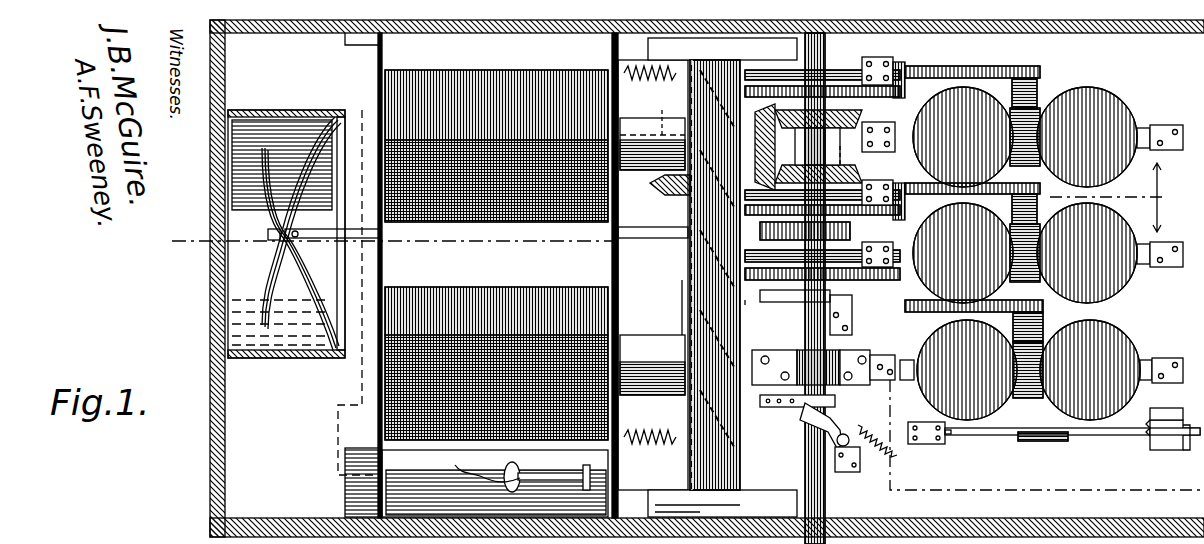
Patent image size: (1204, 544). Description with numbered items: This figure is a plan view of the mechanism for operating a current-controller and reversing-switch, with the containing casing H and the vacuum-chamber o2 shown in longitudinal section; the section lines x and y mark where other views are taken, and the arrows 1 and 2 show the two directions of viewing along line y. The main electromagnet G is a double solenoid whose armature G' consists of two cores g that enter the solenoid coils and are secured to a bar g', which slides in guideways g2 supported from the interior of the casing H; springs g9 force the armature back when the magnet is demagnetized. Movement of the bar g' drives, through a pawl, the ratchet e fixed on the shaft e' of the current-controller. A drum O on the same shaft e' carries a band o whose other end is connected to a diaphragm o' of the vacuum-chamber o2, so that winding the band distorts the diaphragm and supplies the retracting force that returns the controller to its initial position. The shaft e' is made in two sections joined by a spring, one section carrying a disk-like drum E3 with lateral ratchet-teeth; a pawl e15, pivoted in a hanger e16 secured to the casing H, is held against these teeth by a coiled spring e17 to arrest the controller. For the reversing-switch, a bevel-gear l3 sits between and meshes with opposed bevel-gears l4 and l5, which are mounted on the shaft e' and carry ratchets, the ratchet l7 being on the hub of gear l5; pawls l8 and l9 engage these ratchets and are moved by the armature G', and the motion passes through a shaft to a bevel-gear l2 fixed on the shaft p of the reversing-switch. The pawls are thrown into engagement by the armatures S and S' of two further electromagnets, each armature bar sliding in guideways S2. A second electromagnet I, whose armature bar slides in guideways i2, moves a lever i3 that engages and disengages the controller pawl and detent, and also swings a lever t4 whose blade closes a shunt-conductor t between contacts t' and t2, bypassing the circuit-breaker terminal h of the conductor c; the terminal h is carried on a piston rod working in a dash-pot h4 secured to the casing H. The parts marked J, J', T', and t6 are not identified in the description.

The casing H is at (314, 33).
The diaphragm o' is at (286, 234).
The vacuum-chamber o2 is at (301, 224).
The band o is at (345, 247).
The section line x is at (386, 241).
The electromagnet G is at (496, 239).
The armature G' is at (653, 275).
The shaft of reversing-switch p is at (682, 300).
The core g is at (652, 256).
The spring g9 is at (650, 255).
The guideway g2 is at (722, 277).
The section line y is at (916, 152).
The bevel-gear l2 is at (660, 193).
The bar g' is at (715, 275).
The disk-like drum E3 is at (718, 261).
The ratchet e is at (733, 296).
The ratchet l7 is at (815, 85).
The pawl l9 is at (860, 72).
The bevel-gear l3 is at (808, 147).
The bevel-gear l4 is at (866, 175).
The bevel-gear l5 is at (878, 127).
The pawl l8 is at (882, 210).
The drum O is at (822, 250).
The current-controller shaft e' is at (823, 288).
The pawl e15 is at (800, 412).
The stand or hanger e16 is at (866, 453).
The coiled spring e17 is at (940, 447).
The guideway S2 is at (1165, 240).
The armature S' is at (1034, 118).
The armature S is at (1032, 236).
The wheel J is at (963, 195).
The wheel J' is at (1087, 195).
The electromagnet I is at (1022, 360).
The guideway i2 is at (1150, 366).
The lever i3 is at (890, 345).
The arrow 1 is at (1163, 214).
The arrow 2 is at (1163, 180).
The lever t4 is at (1103, 436).
The block t6 is at (1043, 447).
The block T' is at (1164, 426).
The contact t' is at (1169, 407).
The shunt-conductor t is at (1146, 436).
The contact t2 is at (1183, 448).
The terminal h is at (588, 470).
The cylinder or dash-pot h4 is at (385, 482).
The conductor c is at (487, 466).